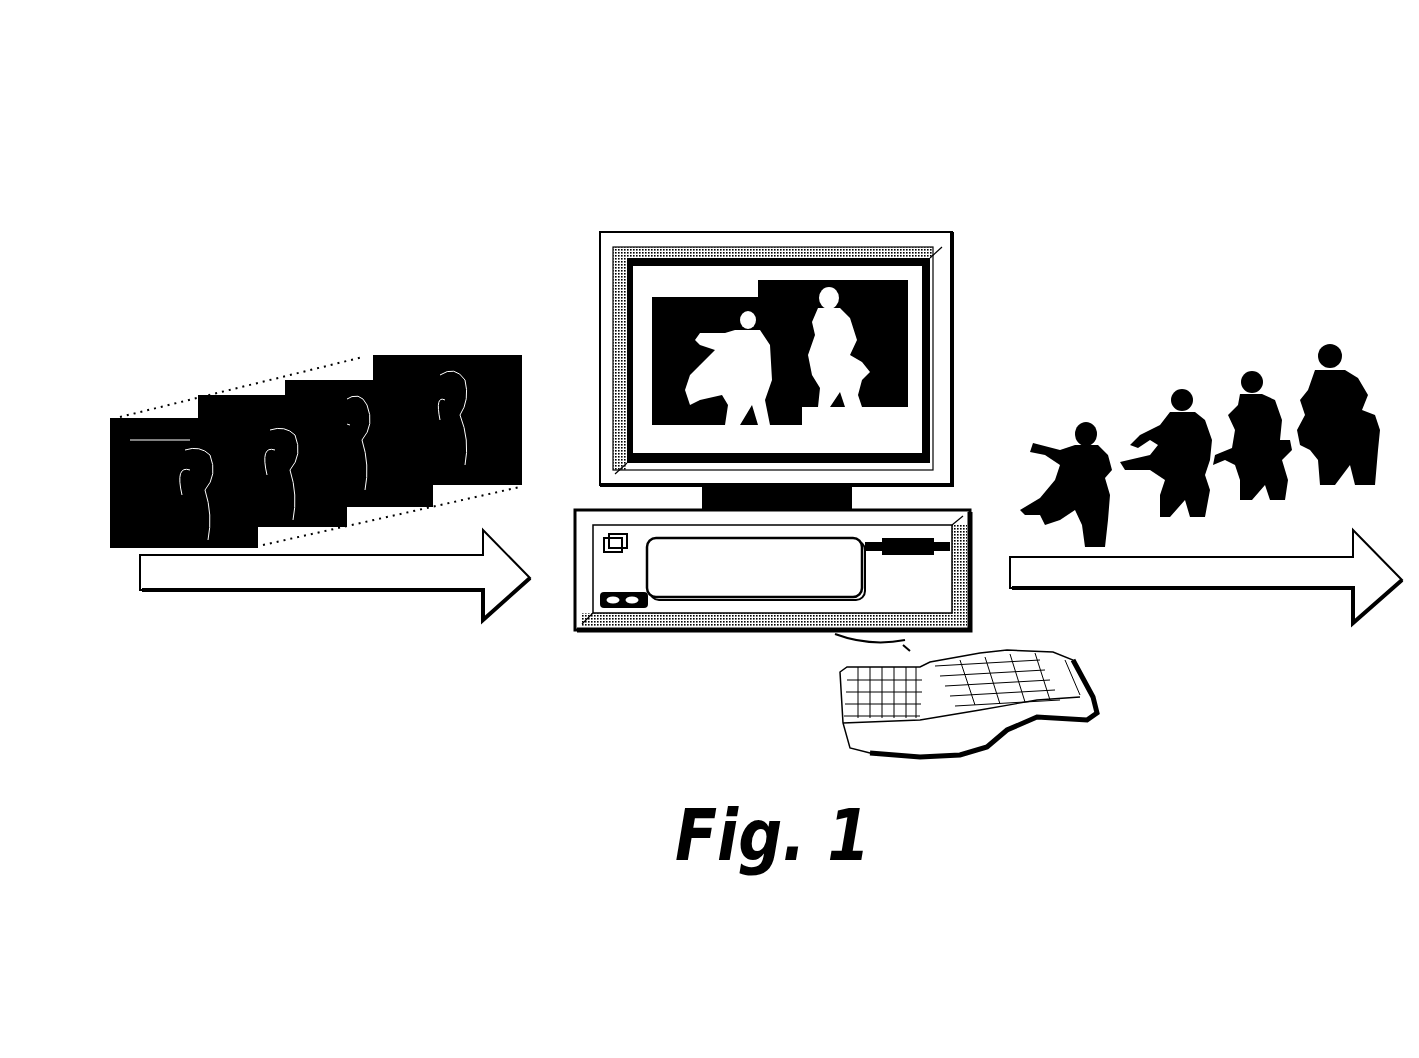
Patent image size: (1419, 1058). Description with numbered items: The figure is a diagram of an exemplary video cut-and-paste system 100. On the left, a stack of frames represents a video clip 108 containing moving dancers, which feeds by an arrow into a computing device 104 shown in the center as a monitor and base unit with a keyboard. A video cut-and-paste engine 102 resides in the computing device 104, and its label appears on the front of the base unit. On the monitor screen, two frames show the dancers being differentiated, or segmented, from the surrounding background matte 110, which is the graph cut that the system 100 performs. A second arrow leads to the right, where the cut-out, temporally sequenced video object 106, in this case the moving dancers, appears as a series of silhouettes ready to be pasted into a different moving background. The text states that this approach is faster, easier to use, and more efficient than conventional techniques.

The video cut-and-paste system 100 is at (372, 104).
The video cut-and-paste engine 102 is at (801, 590).
The computing device 104 is at (932, 611).
The video object 106 is at (1122, 325).
The video clip 108 is at (246, 323).
The background matte 110 is at (800, 280).